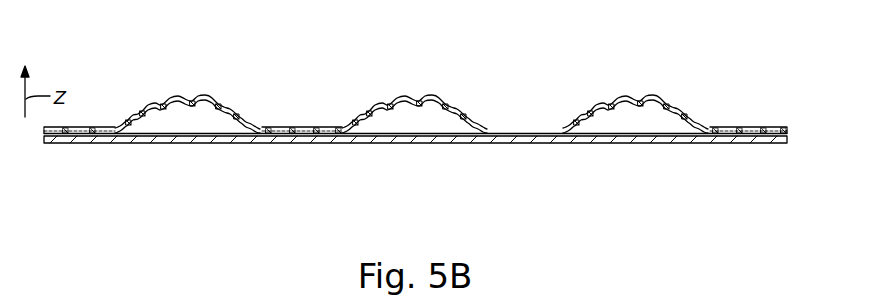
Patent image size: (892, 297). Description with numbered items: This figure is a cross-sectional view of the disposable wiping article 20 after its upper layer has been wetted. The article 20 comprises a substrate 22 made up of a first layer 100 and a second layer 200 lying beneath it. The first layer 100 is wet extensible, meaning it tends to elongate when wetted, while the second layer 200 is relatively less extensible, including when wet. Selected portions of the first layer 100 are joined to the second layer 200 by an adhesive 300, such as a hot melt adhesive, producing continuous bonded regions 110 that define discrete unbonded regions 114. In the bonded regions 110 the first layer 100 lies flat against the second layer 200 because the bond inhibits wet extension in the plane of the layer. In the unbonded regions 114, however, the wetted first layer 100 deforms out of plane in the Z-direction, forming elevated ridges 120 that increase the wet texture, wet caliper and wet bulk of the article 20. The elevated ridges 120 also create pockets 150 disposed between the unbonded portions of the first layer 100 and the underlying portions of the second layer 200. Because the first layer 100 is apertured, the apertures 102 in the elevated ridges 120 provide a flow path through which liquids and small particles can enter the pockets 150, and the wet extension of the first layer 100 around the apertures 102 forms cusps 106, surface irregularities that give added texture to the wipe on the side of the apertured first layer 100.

The disposable wiping article 20 is at (803, 114).
The substrate 22 is at (789, 139).
The first layer 100 is at (787, 126).
The apertures 102 is at (667, 106).
The cusps 106 is at (205, 100).
The bonded regions 110 is at (43, 68).
The unbonded regions 114 is at (117, 68).
The elevated ridges 120 is at (611, 102).
The pockets 150 is at (633, 123).
The second layer 200 is at (750, 140).
The adhesive 300 is at (530, 135).